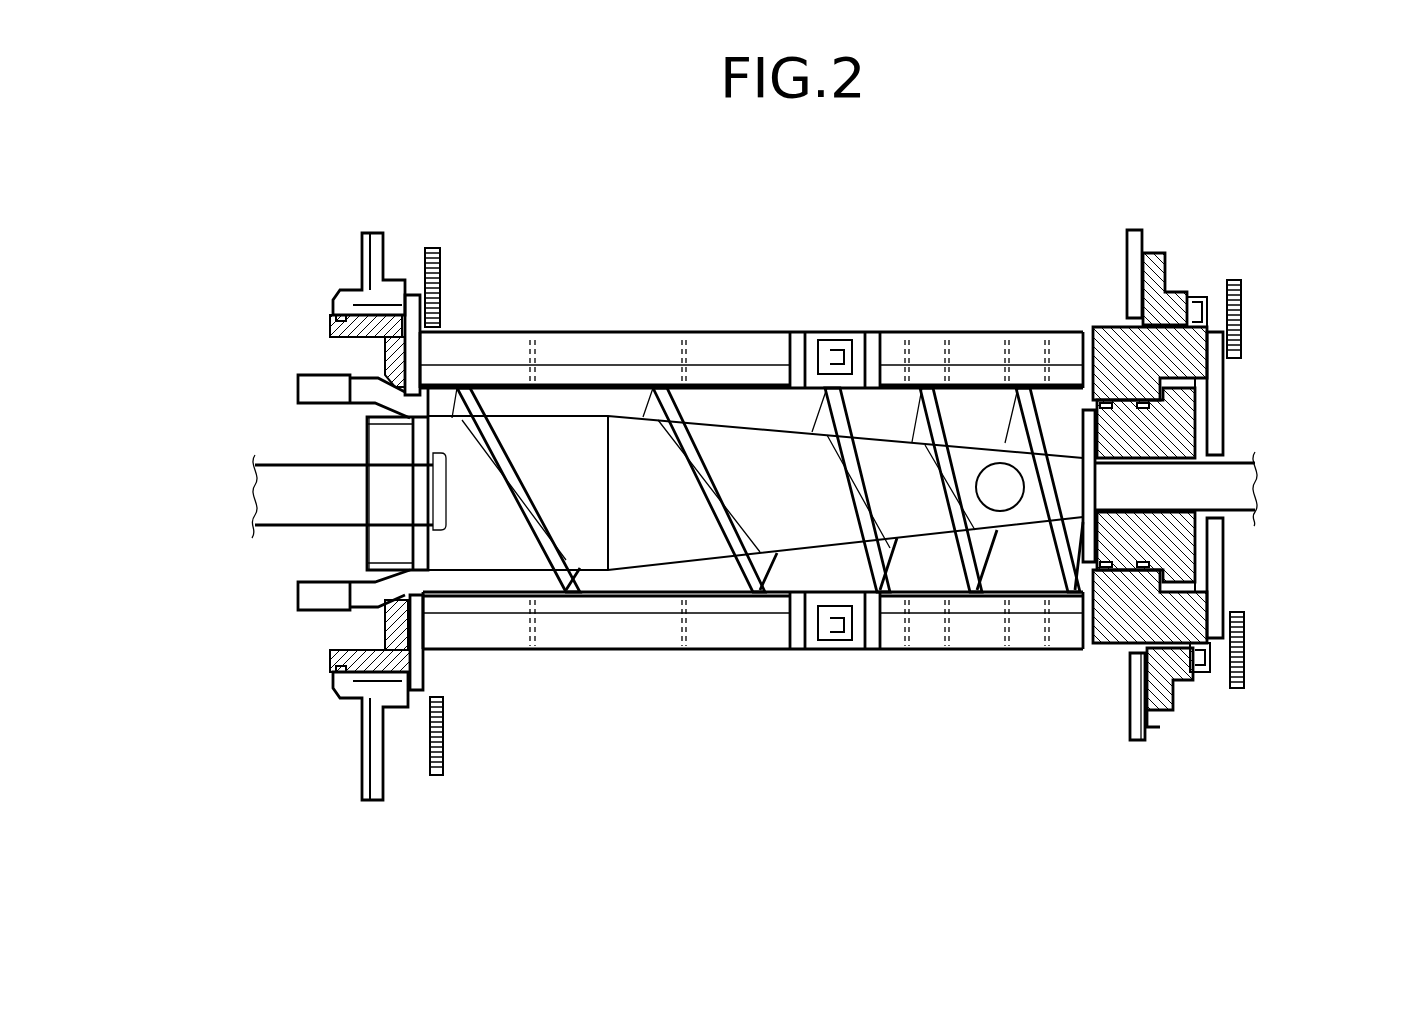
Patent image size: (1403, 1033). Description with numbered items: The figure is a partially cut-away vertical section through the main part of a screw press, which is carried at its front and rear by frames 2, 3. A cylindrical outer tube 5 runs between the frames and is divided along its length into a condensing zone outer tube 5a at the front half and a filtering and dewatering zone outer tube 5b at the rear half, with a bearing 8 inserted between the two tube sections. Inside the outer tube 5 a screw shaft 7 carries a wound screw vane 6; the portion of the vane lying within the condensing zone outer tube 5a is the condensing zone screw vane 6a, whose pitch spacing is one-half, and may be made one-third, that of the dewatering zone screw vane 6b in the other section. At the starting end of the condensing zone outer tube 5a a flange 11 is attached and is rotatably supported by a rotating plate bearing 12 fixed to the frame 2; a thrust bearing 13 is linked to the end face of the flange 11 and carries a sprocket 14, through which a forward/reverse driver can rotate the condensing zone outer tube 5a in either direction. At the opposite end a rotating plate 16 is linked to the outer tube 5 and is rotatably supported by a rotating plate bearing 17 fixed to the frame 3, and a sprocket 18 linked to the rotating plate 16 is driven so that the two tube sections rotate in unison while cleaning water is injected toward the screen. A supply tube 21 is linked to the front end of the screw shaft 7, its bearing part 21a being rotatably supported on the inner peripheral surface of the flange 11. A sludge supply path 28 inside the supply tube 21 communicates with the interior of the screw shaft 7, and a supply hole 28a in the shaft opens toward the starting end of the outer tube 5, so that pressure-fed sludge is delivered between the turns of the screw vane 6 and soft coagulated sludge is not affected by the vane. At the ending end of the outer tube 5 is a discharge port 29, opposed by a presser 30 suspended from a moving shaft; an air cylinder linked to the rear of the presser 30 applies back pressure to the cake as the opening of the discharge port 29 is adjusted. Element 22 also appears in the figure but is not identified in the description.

The frame 2 is at (1231, 495).
The frame 3 is at (348, 733).
The outer tube 5 is at (759, 397).
The condensing zone outer tube 5a is at (1038, 332).
The filtering and dewatering zone outer tube 5b is at (655, 332).
The screw vane 6 is at (761, 587).
The condensing zone screw vane 6a is at (885, 600).
The dewatering zone screw vane 6b is at (548, 578).
The screw shaft 7 is at (794, 528).
The bearing 8 is at (855, 332).
The flange 11 is at (1178, 682).
The rotating plate bearing 12 is at (1155, 253).
The thrust bearing 13 is at (1236, 580).
The sprocket 14 is at (1234, 280).
The rotating plate 16 is at (427, 668).
The rotating plate bearing 17 is at (330, 326).
The sprocket 18 is at (433, 248).
The supply tube 21 is at (1227, 447).
The bearing part 21a is at (1195, 540).
The drive shaft 22 is at (270, 468).
The sludge supply path 28 is at (1185, 483).
The supply hole 28a is at (1000, 492).
The discharge port 29 is at (432, 388).
The presser 30 is at (307, 612).